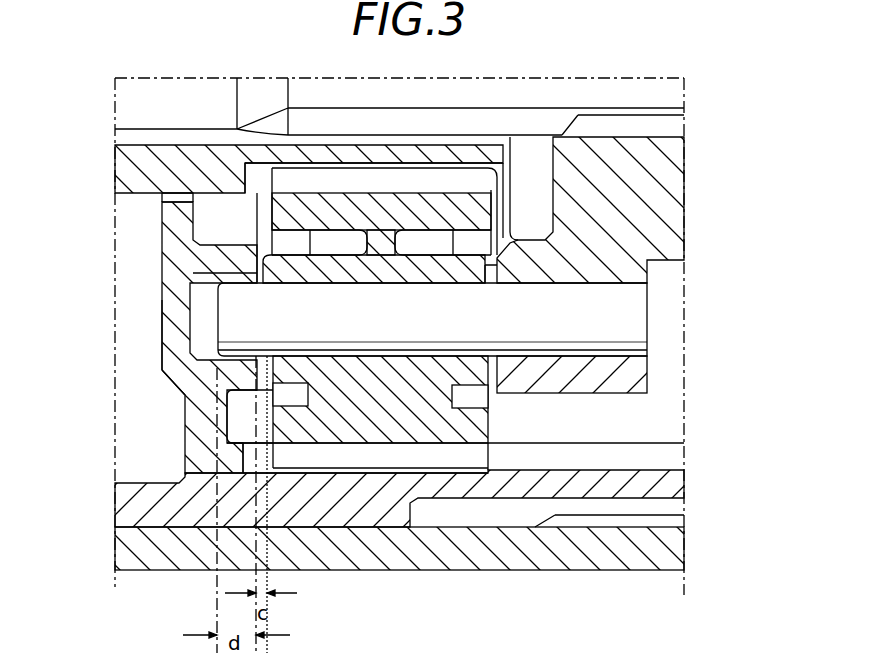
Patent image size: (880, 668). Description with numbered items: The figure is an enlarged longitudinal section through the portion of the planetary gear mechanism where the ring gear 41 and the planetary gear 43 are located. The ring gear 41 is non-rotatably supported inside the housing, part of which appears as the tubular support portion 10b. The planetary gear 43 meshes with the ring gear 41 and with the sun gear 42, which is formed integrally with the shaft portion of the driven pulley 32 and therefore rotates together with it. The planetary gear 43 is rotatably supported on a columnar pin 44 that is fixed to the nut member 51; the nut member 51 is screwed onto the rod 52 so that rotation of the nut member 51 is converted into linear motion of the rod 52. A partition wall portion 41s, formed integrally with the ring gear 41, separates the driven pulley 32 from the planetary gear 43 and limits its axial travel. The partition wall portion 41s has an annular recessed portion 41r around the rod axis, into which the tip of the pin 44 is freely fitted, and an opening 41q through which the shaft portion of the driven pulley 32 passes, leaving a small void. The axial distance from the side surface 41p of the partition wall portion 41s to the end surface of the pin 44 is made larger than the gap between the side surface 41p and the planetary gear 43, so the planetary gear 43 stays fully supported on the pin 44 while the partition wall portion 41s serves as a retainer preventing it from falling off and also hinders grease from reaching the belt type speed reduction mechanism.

The driven pulley 32 is at (117, 162).
The ring gear 41 is at (676, 488).
The opening 41q is at (170, 197).
The side surface 41p is at (255, 273).
The partition wall portion 41s is at (172, 332).
The recessed portion 41r is at (185, 372).
The sun gear 42 is at (465, 150).
The planetary gear 43 is at (375, 410).
The pin 44 is at (640, 311).
The nut member 51 is at (676, 176).
The rod 52 is at (676, 90).
The tubular support portion 10b is at (676, 552).